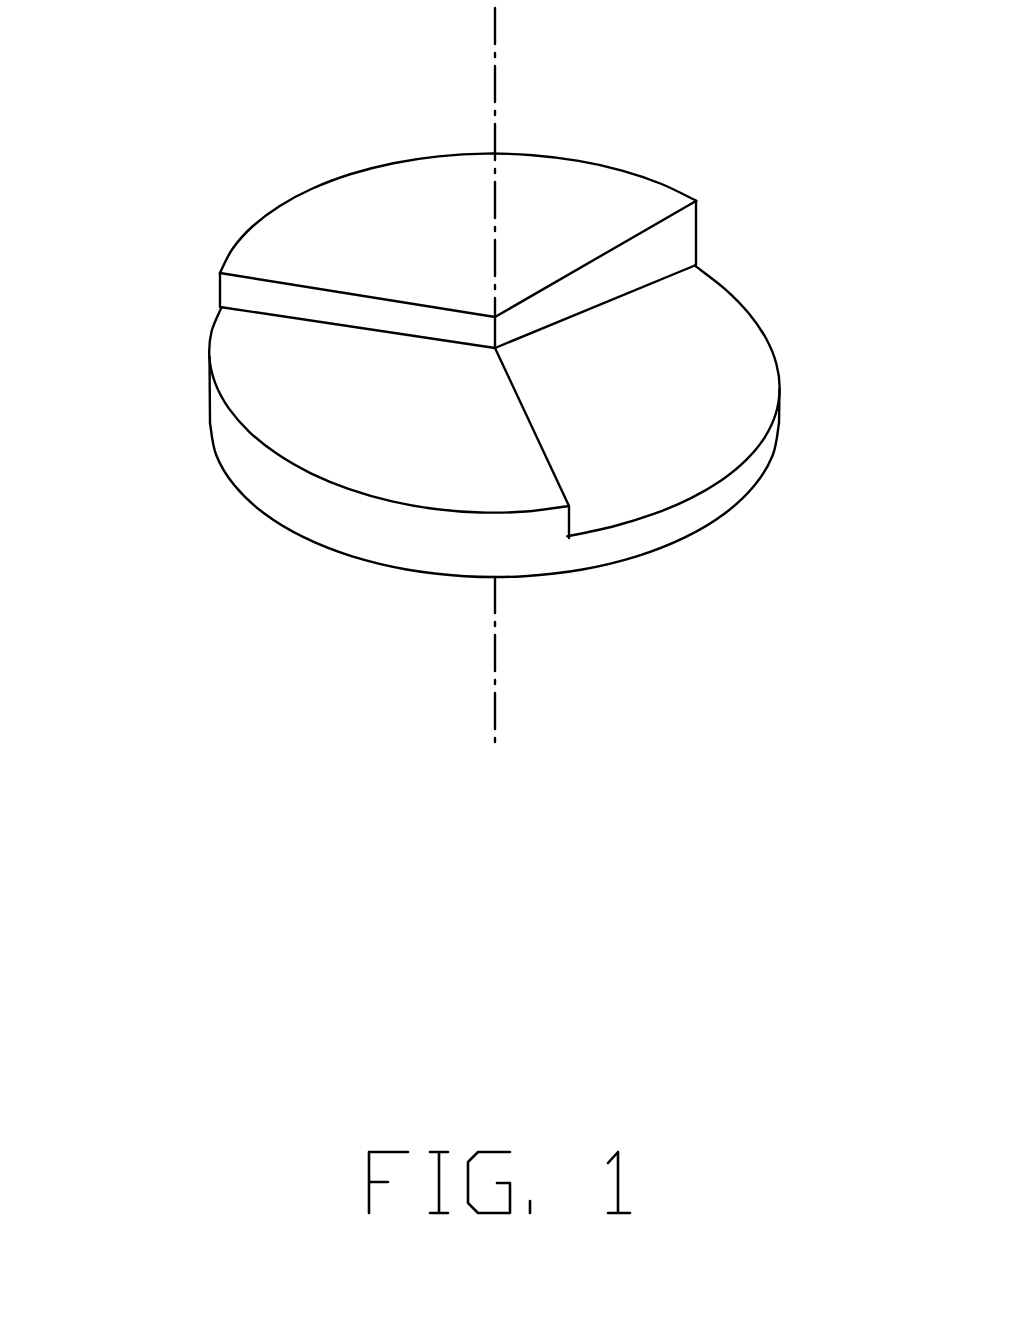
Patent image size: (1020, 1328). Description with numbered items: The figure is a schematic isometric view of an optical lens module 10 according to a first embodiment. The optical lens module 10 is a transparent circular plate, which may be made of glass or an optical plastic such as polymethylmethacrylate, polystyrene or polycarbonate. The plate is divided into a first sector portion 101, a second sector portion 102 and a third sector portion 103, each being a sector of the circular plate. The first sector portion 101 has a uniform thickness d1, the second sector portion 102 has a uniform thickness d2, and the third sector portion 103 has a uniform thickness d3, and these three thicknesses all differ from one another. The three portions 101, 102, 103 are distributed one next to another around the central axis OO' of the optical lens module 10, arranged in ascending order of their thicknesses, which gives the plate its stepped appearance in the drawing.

The optical lens module 10 is at (474, 388).
The first sector portion 101 is at (673, 408).
The second sector portion 102 is at (330, 415).
The third sector portion 103 is at (397, 212).